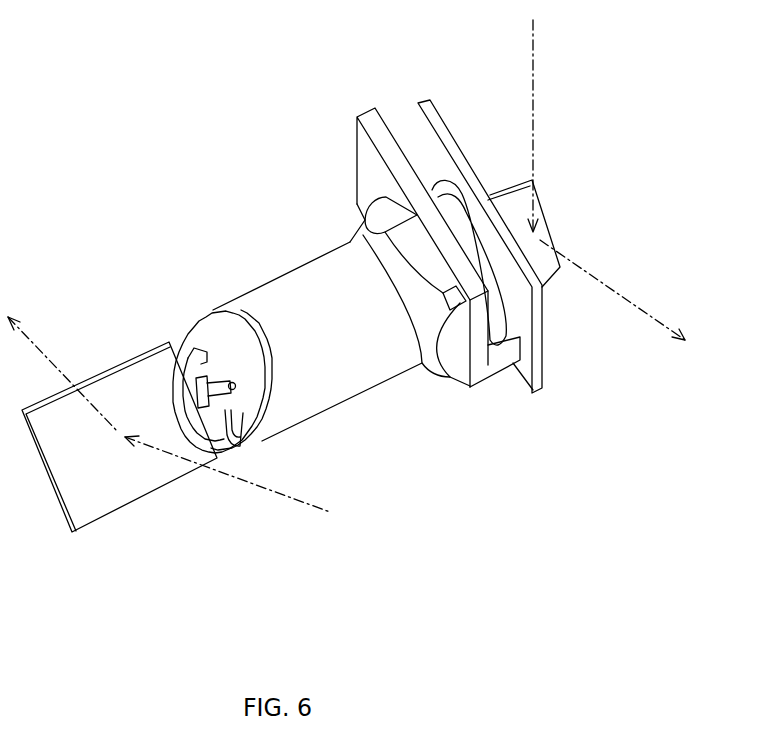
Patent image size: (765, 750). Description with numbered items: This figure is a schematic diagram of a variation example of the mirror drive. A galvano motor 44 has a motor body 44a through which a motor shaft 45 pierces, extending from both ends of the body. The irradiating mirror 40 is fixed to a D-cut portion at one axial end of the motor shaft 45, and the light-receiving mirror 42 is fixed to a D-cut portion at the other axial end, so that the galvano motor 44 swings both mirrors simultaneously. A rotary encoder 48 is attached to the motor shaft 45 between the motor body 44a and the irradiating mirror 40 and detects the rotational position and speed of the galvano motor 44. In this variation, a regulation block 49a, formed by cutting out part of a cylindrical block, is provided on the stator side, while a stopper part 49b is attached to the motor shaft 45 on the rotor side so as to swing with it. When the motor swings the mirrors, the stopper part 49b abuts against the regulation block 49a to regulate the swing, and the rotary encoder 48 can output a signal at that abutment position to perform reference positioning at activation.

The irradiating mirror 40 is at (512, 194).
The light-receiving mirror 42 is at (122, 366).
The galvano motor 44 is at (293, 260).
The motor body 44a is at (244, 312).
The motor shaft 45 is at (196, 390).
The rotary encoder 48 is at (458, 194).
The regulation block 49a is at (244, 414).
The stopper part 49b is at (236, 383).